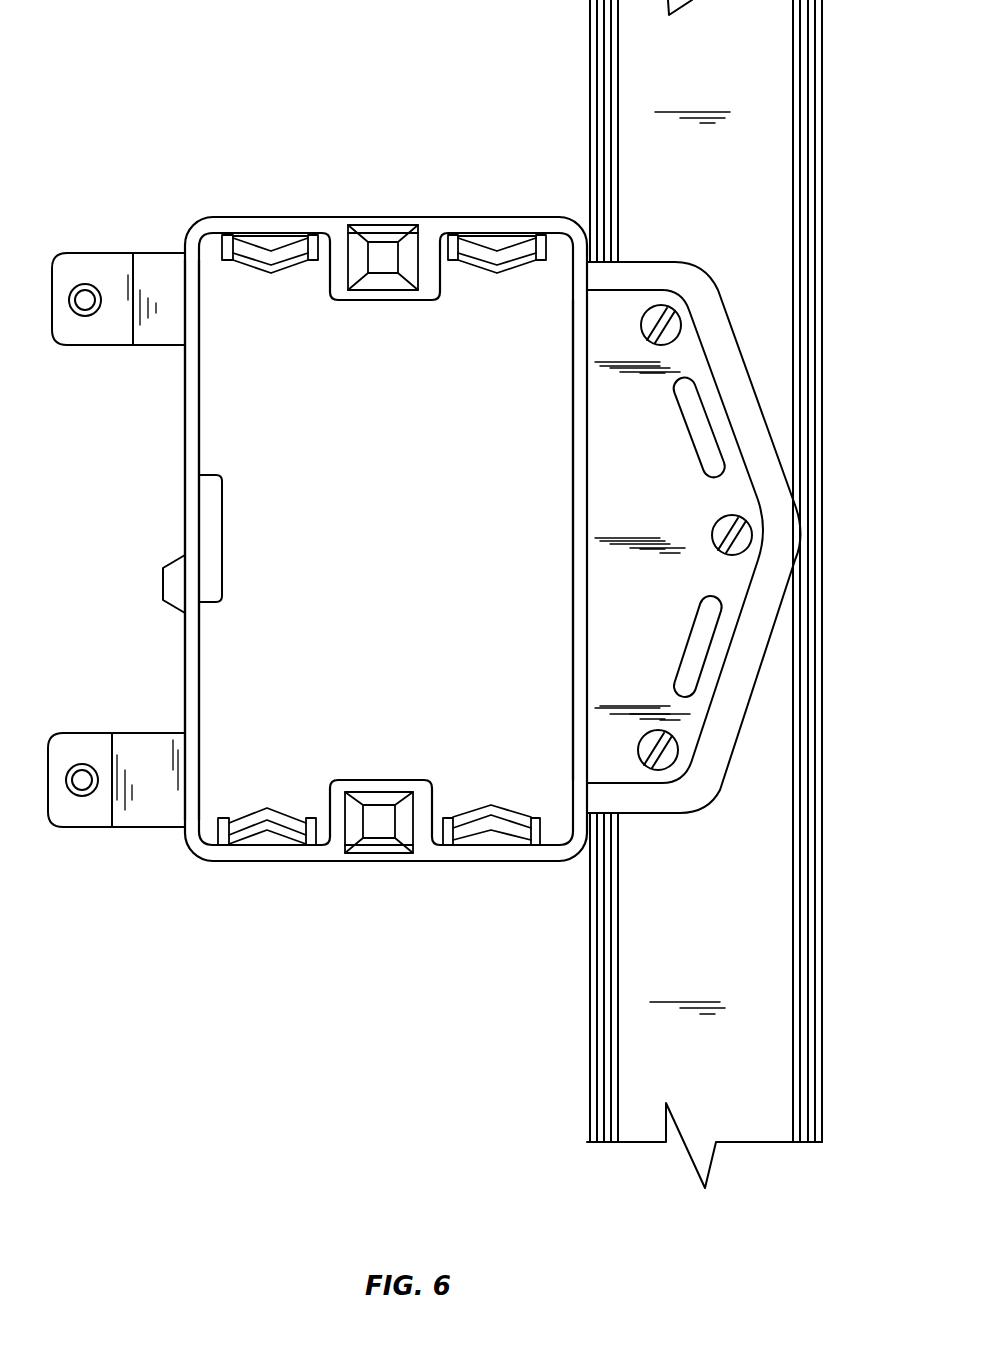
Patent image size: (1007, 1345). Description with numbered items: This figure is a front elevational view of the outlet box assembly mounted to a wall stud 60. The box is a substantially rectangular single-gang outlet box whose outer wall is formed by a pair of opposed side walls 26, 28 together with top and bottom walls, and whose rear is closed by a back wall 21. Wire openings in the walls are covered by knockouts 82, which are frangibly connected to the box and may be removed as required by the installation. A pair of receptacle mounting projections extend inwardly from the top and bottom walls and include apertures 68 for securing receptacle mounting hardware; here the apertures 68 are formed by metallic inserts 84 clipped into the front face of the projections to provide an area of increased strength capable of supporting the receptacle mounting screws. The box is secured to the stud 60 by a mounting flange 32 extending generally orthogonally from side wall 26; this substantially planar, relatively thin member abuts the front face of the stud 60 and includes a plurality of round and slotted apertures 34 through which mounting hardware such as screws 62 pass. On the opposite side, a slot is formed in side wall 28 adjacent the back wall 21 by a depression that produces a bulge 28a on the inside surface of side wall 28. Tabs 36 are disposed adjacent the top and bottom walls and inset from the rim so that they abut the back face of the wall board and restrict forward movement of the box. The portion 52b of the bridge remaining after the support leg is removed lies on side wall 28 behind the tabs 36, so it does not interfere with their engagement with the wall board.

The back wall 21 is at (372, 492).
The side wall 26 is at (572, 790).
The side wall 28 is at (185, 400).
The bulge 28a is at (210, 510).
The mounting flange 32 is at (665, 805).
The apertures 34 is at (707, 622).
The tabs 36 is at (135, 815).
The portion of bridge 52b is at (157, 583).
The stud 60 is at (740, 207).
The screws 62 is at (735, 535).
The apertures 68 is at (385, 250).
The knockouts 82 is at (255, 265).
The metallic inserts 84 is at (358, 250).